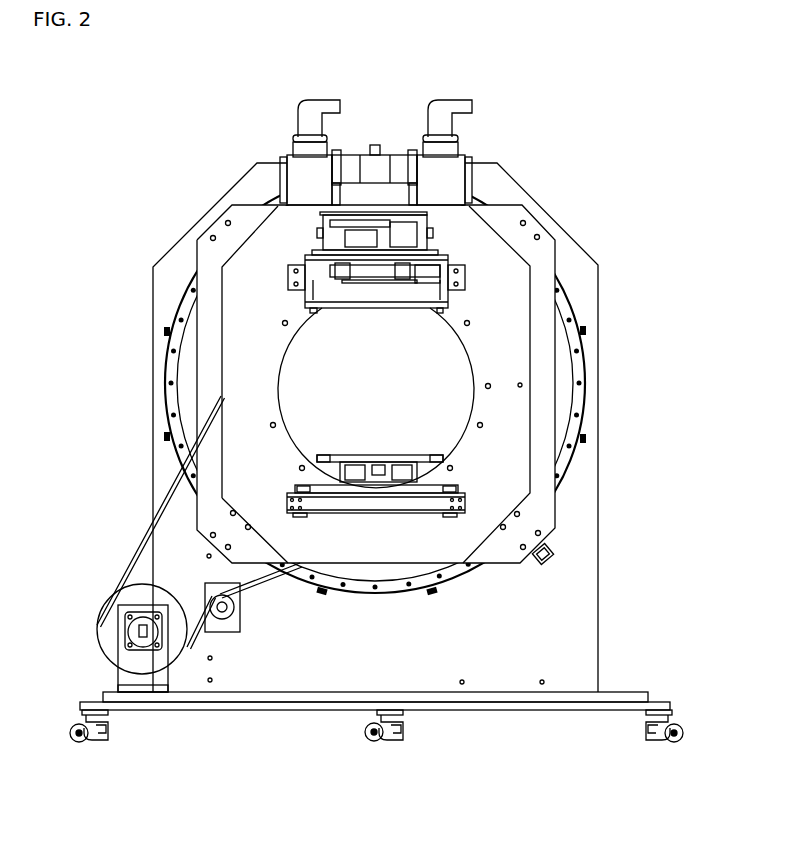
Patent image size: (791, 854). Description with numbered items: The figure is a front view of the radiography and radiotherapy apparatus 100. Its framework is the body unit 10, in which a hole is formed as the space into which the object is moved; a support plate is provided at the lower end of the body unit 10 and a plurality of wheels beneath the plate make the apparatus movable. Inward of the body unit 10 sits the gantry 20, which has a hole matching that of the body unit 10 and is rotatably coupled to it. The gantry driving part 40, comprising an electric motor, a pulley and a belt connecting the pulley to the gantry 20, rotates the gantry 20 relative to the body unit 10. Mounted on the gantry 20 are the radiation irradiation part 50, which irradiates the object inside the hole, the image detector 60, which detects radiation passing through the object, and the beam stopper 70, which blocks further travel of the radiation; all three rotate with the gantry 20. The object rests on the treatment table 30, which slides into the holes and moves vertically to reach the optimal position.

The radiography and radiotherapy apparatus 100 is at (205, 135).
The body unit 10 is at (580, 277).
The gantry 20 is at (508, 328).
The treatment table 30 is at (398, 455).
The gantry driving part 40 is at (140, 632).
The radiation irradiation part 50 is at (382, 195).
The image detector 60 is at (297, 488).
The beam stopper 70 is at (425, 500).